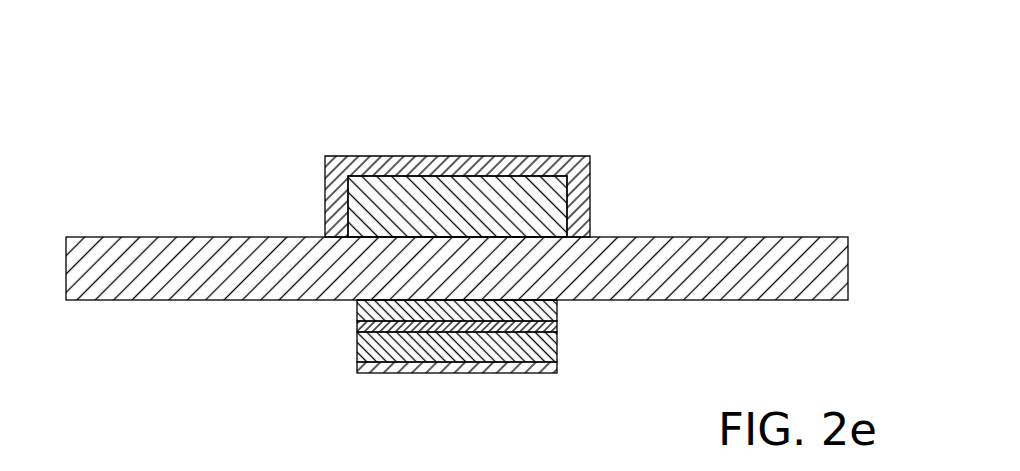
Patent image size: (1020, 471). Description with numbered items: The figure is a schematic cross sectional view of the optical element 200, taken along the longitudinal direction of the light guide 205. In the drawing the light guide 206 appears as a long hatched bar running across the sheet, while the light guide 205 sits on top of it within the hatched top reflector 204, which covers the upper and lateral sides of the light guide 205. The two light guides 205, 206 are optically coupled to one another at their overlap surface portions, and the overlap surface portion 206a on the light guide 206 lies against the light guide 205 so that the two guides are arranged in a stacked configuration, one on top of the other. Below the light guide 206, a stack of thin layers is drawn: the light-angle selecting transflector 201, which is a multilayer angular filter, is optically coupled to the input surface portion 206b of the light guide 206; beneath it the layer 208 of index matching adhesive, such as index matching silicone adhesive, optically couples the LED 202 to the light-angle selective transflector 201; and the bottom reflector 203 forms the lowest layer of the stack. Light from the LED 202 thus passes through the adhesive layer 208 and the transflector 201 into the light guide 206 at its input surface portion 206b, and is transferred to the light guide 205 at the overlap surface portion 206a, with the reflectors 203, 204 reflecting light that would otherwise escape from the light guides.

The optical element 200 is at (673, 82).
The light-angle selecting transflector 201 is at (557, 307).
The LED 202 is at (557, 342).
The bottom reflector 203 is at (370, 373).
The top reflector 204 is at (477, 156).
The light guide 205 is at (538, 176).
The light guide 206 is at (792, 237).
The overlap surface portion 206a is at (419, 248).
The input surface portion 206b is at (505, 312).
The layer of index matching adhesive 208 is at (557, 327).